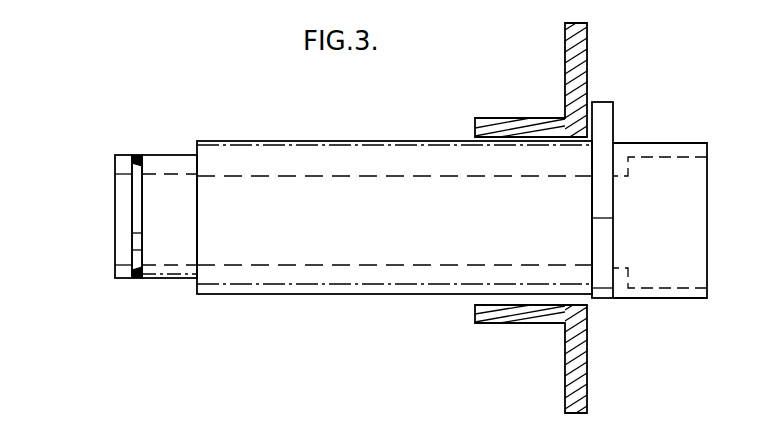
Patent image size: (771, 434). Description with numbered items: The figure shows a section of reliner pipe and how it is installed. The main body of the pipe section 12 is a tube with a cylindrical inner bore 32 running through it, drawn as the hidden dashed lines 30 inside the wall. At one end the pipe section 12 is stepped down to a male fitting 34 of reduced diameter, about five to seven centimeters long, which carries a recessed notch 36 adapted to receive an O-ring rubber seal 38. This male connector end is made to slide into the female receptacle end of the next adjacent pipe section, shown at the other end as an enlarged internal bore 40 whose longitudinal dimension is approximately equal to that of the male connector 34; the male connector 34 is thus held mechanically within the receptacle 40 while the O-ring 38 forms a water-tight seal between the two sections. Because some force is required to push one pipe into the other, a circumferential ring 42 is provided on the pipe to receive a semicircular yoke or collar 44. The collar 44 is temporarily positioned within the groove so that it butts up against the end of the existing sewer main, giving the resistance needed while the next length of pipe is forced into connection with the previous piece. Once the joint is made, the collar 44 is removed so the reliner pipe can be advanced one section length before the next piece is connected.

The pipe section 12 is at (306, 139).
The bore 30 is at (372, 141).
The cylindrical inner bore 32 is at (424, 176).
The male fitting 34 is at (181, 152).
The recessed notch 36 is at (142, 170).
The O-ring rubber seal 38 is at (137, 155).
The enlarged internal bore 40 is at (663, 166).
The circumferential ring 42 is at (603, 296).
The semicircular yoke or collar 44 is at (605, 128).